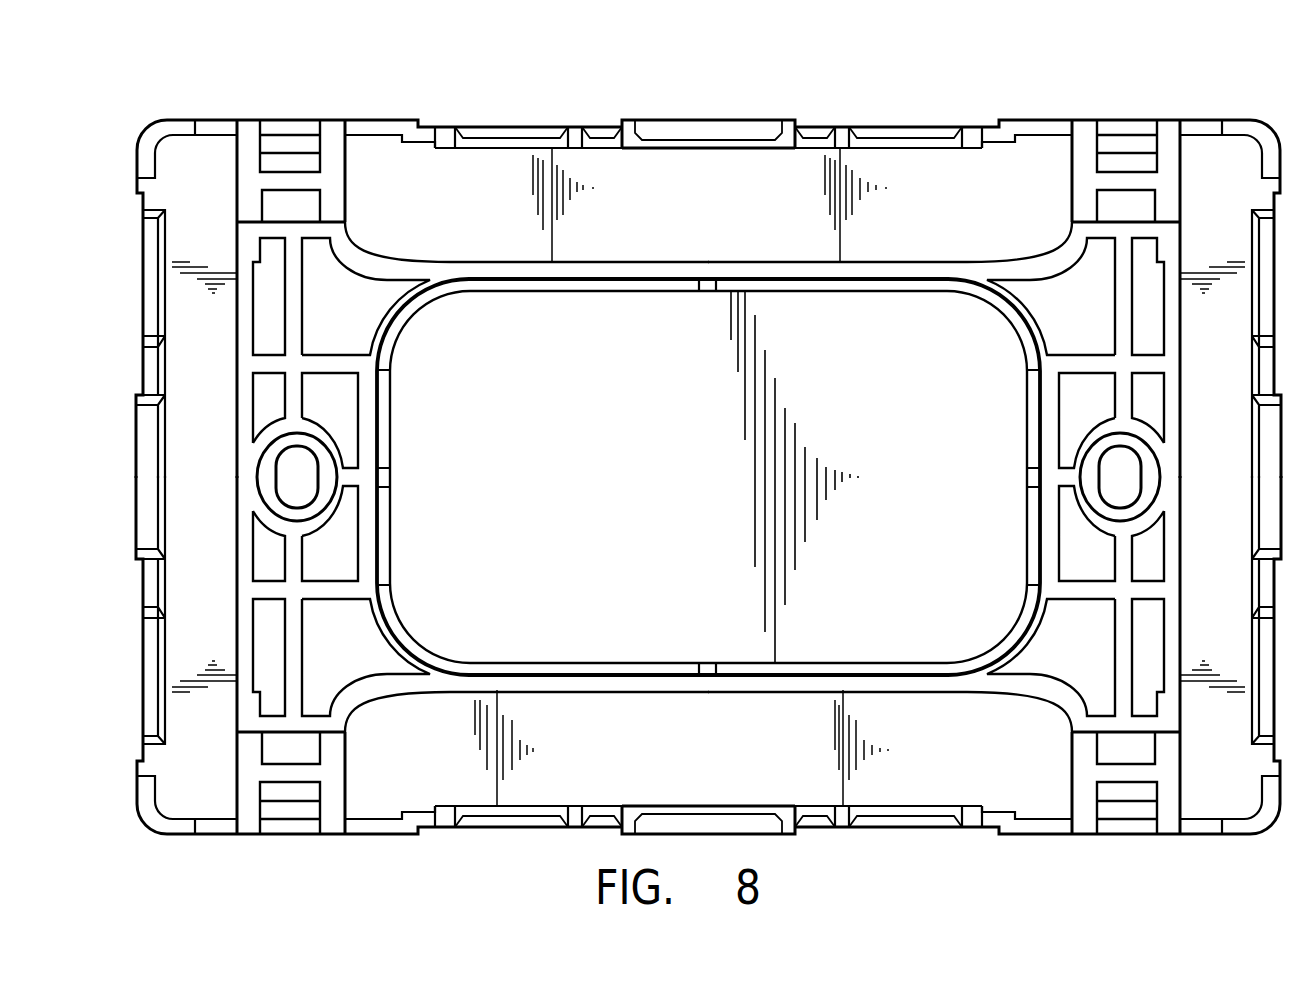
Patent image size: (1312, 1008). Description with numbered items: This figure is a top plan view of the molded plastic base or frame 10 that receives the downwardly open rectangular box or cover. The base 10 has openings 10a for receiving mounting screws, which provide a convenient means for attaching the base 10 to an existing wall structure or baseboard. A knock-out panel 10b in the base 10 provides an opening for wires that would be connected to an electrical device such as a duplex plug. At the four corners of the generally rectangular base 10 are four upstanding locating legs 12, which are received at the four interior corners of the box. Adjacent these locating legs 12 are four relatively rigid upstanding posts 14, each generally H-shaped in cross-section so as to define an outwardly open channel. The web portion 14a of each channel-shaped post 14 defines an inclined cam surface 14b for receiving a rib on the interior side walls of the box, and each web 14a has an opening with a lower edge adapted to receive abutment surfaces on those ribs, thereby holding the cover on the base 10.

The base or frame 10 is at (358, 86).
The openings 10a is at (280, 488).
The knock-out panel 10b is at (592, 426).
The locating legs 12 is at (150, 118).
The upstanding posts 14 is at (262, 116).
The web portion 14a is at (303, 184).
The inclined cam surface 14b is at (272, 156).